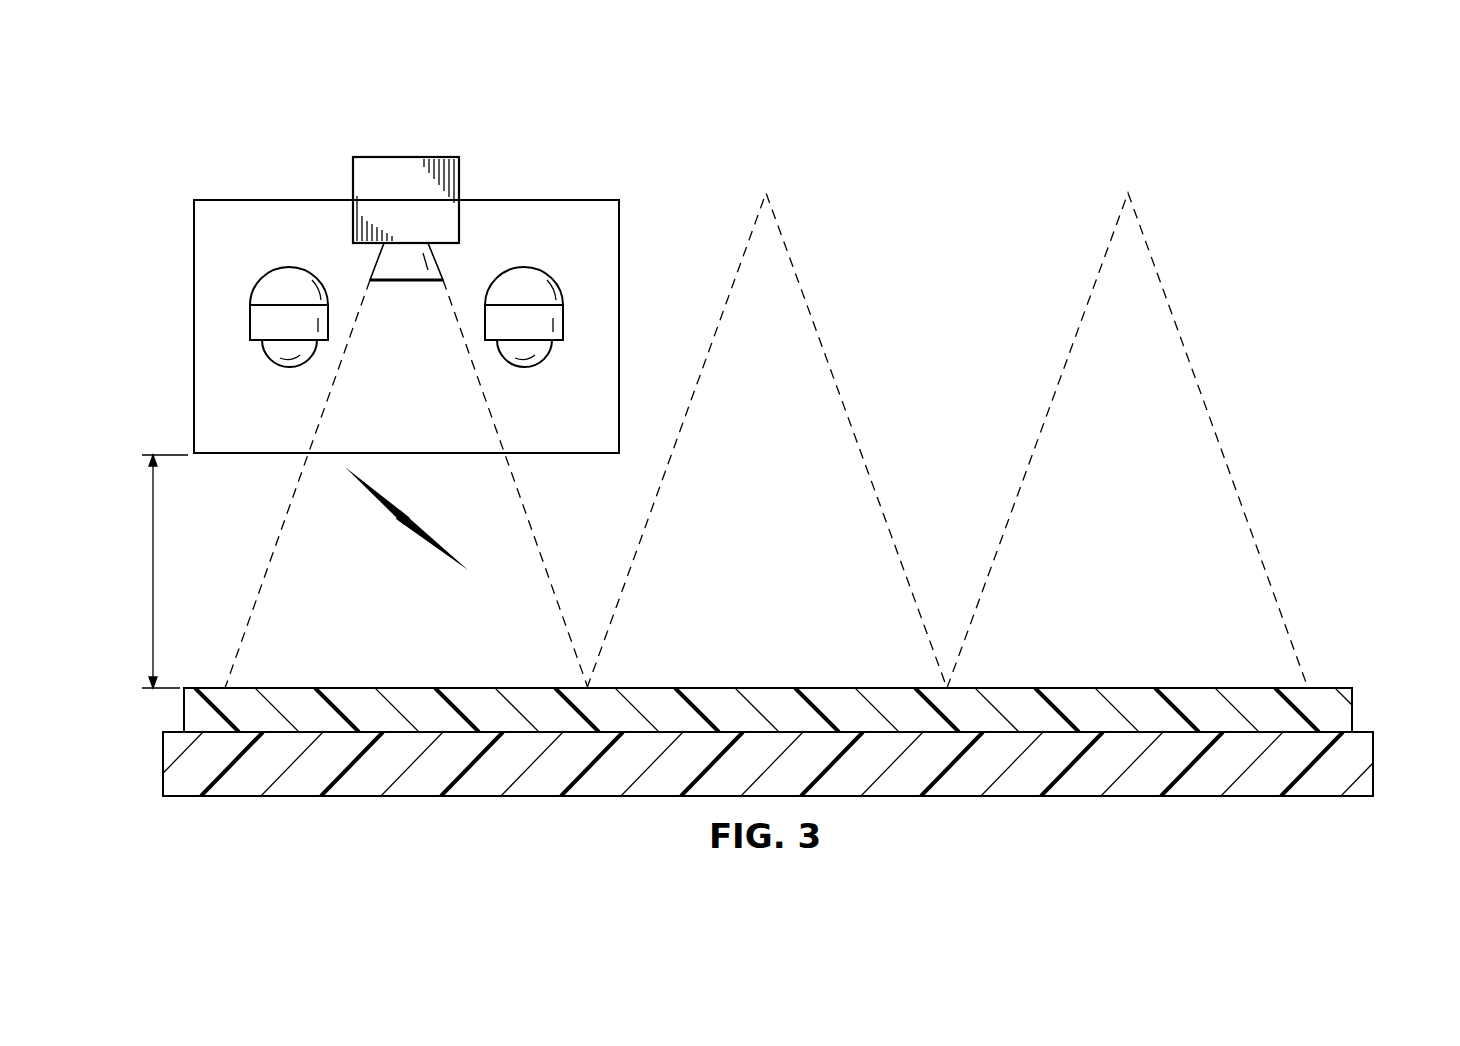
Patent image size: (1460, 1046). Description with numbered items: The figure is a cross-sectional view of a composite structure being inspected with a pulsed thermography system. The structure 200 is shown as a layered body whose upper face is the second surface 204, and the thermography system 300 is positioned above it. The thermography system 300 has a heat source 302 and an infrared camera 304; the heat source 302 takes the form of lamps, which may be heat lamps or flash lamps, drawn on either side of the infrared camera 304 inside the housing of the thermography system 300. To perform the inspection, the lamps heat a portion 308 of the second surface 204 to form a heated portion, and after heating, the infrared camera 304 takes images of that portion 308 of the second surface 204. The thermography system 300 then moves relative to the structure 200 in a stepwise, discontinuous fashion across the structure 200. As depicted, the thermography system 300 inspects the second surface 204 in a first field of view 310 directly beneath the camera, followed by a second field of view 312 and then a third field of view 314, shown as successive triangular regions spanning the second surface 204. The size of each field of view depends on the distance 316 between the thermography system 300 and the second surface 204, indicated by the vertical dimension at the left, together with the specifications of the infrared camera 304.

The thermography system 300 is at (266, 102).
The heat source 302 is at (287, 221).
The infrared camera 304 is at (407, 157).
The portion 308 is at (757, 682).
The first field of view 310 is at (538, 555).
The second field of view 312 is at (858, 443).
The third field of view 314 is at (1218, 441).
The distance 316 is at (152, 573).
The second surface 204 is at (1245, 688).
The structure 200 is at (1382, 761).